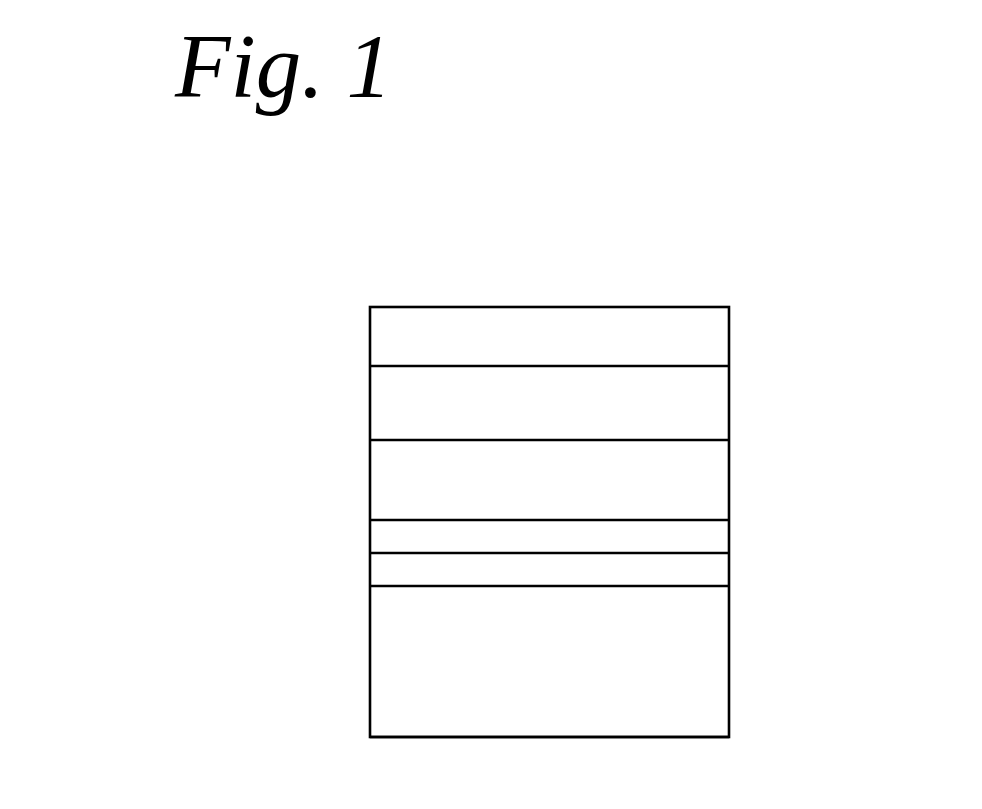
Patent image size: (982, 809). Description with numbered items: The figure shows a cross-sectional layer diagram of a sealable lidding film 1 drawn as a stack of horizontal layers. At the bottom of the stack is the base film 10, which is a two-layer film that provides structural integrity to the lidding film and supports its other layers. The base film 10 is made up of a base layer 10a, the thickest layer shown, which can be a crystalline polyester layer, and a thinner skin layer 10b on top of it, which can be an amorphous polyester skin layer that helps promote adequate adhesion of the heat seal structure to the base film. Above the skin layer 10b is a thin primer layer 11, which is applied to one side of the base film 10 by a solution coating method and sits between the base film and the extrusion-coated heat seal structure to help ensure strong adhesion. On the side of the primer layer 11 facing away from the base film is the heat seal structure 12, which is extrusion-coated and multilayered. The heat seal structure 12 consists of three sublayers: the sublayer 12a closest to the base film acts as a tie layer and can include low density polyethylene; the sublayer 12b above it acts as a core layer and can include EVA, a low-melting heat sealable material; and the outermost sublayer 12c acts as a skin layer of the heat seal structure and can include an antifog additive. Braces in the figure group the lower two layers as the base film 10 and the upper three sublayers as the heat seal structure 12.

The sealable lidding film 1 is at (122, 310).
The base film 10 is at (539, 645).
The base layer 10a is at (388, 655).
The skin layer 10b is at (380, 565).
The primer layer 11 is at (390, 525).
The heat seal structure 12 is at (547, 422).
The sublayer 12a is at (408, 453).
The sublayer 12b is at (400, 382).
The sublayer 12c is at (400, 325).